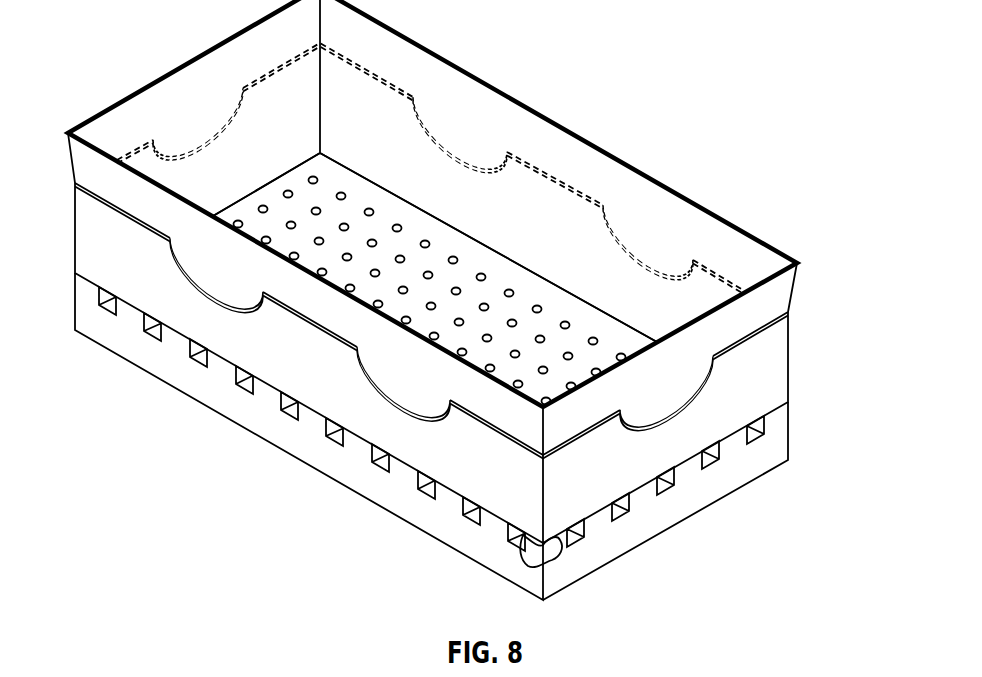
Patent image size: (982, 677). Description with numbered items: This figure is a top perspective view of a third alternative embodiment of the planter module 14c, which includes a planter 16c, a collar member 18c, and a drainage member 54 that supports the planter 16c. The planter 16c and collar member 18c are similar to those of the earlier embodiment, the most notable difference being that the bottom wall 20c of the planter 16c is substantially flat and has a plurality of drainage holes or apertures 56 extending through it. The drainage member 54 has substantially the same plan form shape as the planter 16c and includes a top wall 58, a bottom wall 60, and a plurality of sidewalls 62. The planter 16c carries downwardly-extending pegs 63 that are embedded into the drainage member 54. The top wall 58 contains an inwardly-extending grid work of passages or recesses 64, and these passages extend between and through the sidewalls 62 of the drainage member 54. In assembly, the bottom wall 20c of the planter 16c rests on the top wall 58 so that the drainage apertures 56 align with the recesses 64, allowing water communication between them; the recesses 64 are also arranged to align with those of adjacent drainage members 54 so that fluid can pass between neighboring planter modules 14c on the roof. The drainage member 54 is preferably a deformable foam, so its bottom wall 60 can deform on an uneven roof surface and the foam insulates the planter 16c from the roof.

The planter module 14c is at (463, 309).
The collar member 18c is at (432, 227).
The planter 16c is at (735, 260).
The bottom wall 20c is at (330, 182).
The drainage holes or apertures 56 is at (481, 272).
The top wall 58 is at (772, 408).
The drainage member 54 is at (467, 446).
The bottom wall 60 is at (703, 512).
The sidewalls 62 is at (422, 513).
The passages or recesses 64 is at (620, 520).
The pegs 63 is at (553, 550).